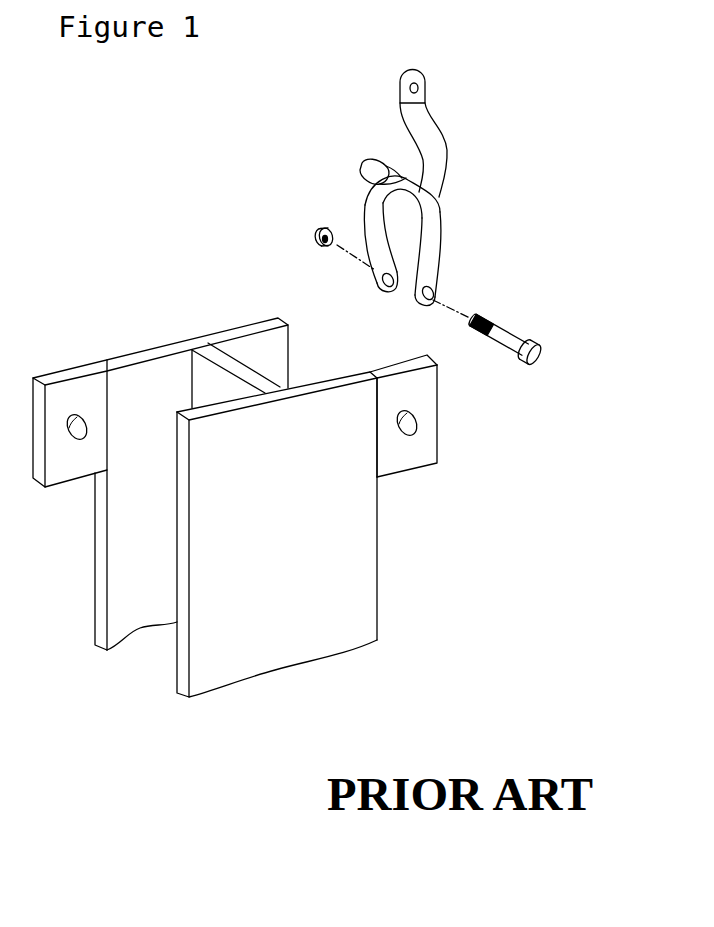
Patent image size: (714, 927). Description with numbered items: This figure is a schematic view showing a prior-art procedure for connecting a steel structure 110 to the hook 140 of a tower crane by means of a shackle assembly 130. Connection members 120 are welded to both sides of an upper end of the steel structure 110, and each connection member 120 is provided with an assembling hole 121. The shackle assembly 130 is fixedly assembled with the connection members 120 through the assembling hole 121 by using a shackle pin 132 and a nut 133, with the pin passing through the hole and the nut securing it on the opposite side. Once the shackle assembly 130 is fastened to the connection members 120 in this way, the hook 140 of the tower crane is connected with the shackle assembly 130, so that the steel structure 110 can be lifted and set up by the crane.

The steel structure 110 is at (282, 507).
The connection member 120 is at (282, 432).
The assembling hole 121 is at (413, 423).
The shackle assembly 130 is at (430, 212).
The shackle pin 132 is at (515, 338).
The nut 133 is at (313, 232).
The hook 140 is at (430, 145).